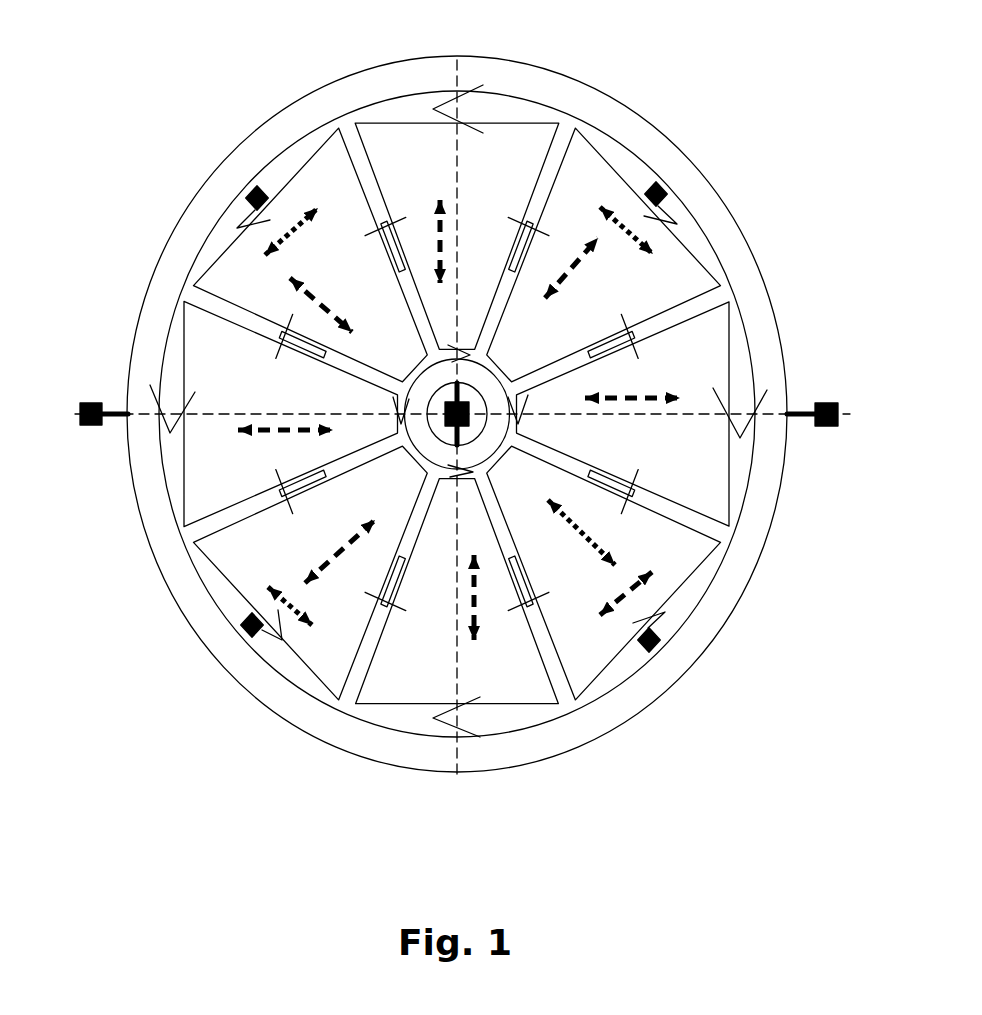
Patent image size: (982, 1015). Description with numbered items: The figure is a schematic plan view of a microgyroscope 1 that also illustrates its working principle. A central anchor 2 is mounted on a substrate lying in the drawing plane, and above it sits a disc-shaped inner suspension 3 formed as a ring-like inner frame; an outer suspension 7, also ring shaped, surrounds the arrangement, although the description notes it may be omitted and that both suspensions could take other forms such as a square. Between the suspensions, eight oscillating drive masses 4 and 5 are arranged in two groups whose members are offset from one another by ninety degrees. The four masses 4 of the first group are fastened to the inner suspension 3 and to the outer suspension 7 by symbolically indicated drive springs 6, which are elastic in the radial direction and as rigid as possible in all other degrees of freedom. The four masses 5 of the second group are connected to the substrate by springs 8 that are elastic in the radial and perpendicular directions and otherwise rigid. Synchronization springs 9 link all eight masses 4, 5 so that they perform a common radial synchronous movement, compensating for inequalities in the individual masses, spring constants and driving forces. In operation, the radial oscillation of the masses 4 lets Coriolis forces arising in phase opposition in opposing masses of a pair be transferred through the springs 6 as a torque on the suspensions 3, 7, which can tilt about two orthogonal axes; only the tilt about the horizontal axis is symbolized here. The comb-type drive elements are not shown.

The microgyroscope 1 is at (362, 778).
The central anchor 2 is at (462, 420).
The inner suspension 3 is at (425, 442).
The oscillating drive mass of the first group 4 is at (520, 140).
The oscillating drive mass of the second group 5 is at (240, 268).
The drive spring 6 is at (528, 395).
The outer suspension 7 is at (752, 528).
The spring 8 is at (660, 620).
The synchronization spring 9 is at (362, 683).